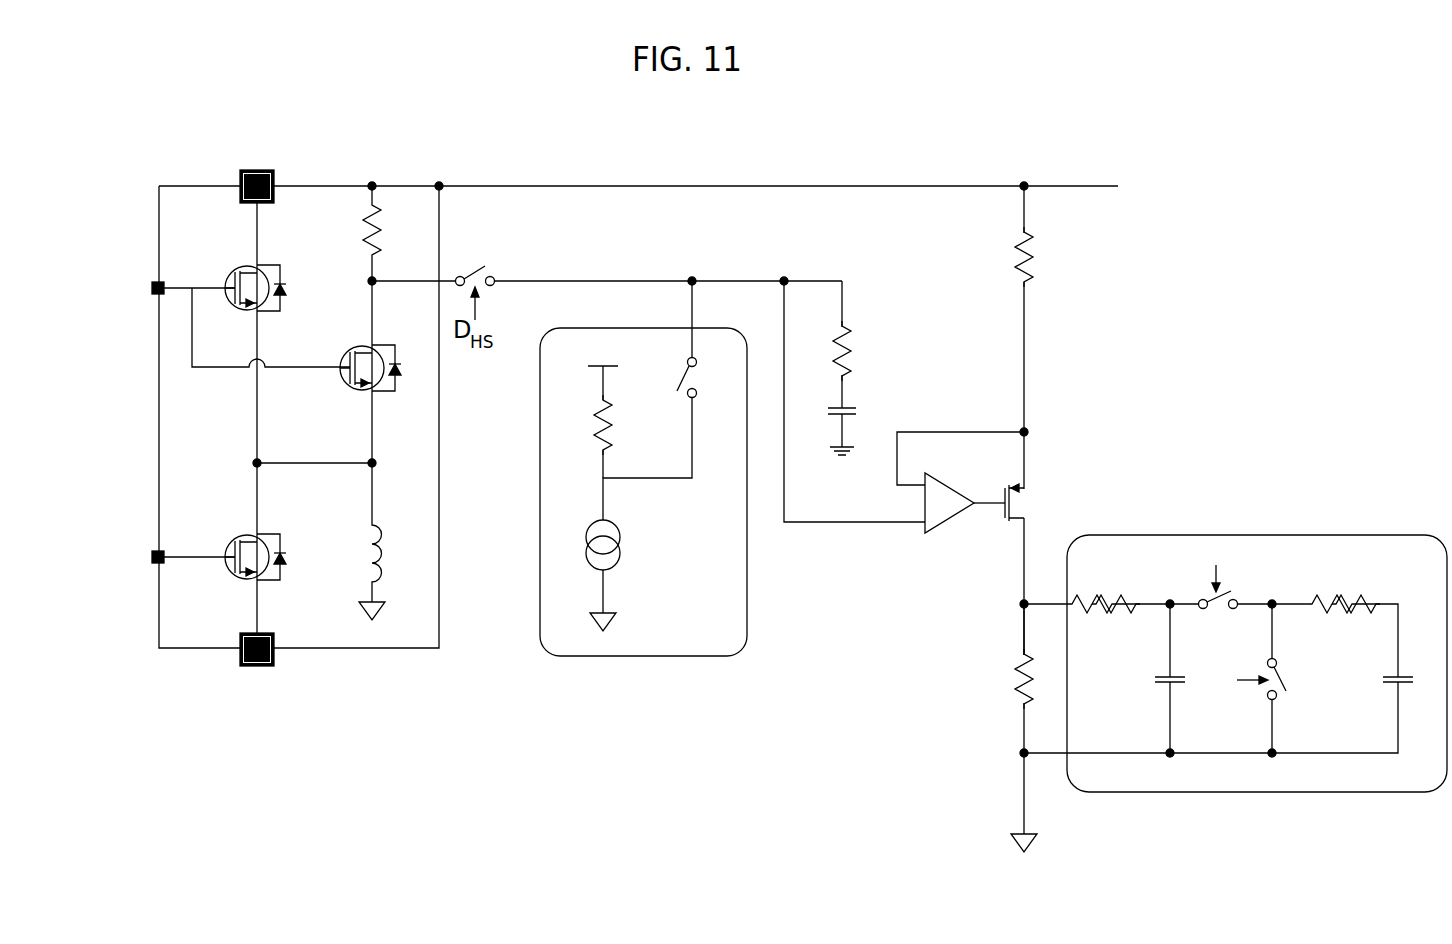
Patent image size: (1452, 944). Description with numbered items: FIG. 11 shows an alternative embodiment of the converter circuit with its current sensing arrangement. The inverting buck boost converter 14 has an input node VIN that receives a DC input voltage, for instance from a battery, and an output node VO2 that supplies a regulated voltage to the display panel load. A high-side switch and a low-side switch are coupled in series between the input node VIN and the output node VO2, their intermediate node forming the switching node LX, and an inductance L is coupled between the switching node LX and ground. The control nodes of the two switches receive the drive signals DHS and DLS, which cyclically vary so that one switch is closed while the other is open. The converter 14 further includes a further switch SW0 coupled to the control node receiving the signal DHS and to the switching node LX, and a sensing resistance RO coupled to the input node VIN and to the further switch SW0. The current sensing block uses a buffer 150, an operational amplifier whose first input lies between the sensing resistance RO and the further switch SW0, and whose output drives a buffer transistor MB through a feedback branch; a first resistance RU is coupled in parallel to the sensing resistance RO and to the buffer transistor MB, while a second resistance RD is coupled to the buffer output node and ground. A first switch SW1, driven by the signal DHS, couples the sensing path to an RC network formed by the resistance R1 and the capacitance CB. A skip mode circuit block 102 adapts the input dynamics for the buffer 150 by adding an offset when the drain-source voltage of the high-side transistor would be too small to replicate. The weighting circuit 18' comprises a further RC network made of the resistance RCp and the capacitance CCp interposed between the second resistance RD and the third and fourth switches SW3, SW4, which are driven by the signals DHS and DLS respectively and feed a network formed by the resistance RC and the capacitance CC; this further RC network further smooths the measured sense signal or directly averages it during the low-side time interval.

The inverting buck boost converter 14 is at (269, 411).
The skip mode circuit block 102 is at (672, 638).
The buffer 150 is at (947, 513).
The weighting circuit 18' is at (1235, 627).
The input node VIN is at (257, 170).
The high-side drive signal DHS is at (167, 279).
The low-side drive signal DLS is at (167, 548).
The further switch SW0 is at (363, 358).
The sensing resistance RO is at (363, 228).
The switching node LX is at (375, 470).
The inductance L is at (392, 535).
The output node VO2 is at (230, 669).
The first switch SW1 is at (476, 268).
The RC network resistance R1 is at (848, 348).
The RC network capacitance CB is at (850, 410).
The first resistance RU is at (1035, 262).
The buffer transistor MB is at (1018, 500).
The second resistance RD is at (1015, 673).
The further RC network resistance RCp is at (1103, 598).
The further RC network capacitance CCp is at (1155, 670).
The third switch SW3 is at (1233, 597).
The fourth switch SW4 is at (1282, 680).
The weighting resistance RC is at (1360, 593).
The weighting capacitance CC is at (1408, 682).